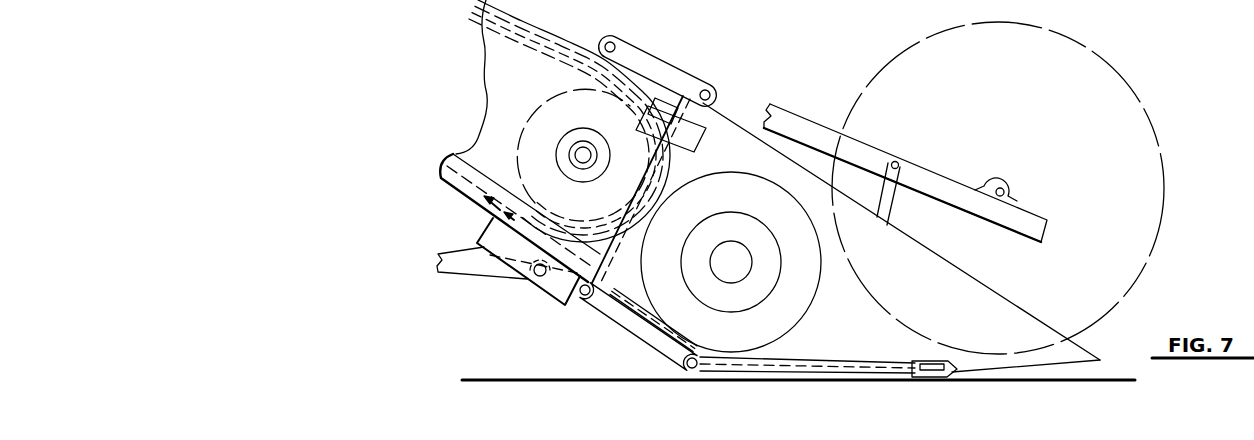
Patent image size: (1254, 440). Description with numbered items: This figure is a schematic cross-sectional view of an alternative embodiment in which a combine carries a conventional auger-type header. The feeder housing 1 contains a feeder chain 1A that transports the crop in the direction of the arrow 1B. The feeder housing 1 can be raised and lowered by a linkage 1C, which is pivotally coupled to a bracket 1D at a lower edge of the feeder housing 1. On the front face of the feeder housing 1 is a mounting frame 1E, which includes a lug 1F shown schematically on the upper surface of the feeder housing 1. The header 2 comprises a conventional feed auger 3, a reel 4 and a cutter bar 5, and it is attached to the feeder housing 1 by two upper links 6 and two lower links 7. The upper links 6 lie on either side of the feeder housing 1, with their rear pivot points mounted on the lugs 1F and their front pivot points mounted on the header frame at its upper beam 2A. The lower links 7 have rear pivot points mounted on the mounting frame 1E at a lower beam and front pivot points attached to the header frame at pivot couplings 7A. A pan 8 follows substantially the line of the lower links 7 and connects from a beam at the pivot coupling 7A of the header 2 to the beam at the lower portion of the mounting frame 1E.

The feeder housing 1 is at (497, 74).
The feeder chain 1A is at (458, 171).
The arrow 1B is at (497, 215).
The linkage 1C is at (470, 266).
The bracket 1D is at (532, 288).
The mounting frame 1E is at (641, 118).
The lug 1F is at (605, 40).
The header 2 is at (944, 292).
The upper beam 2A is at (700, 128).
The feed auger 3 is at (780, 312).
The reel 4 is at (1130, 87).
The cutter bar 5 is at (944, 354).
The upper links 6 is at (655, 62).
The lower links 7 is at (620, 318).
The pivot couplings 7A is at (688, 368).
The pan 8 is at (636, 294).